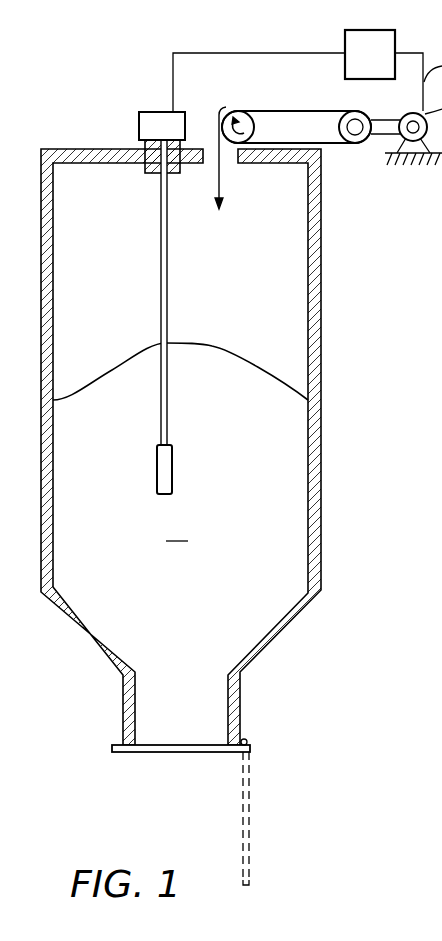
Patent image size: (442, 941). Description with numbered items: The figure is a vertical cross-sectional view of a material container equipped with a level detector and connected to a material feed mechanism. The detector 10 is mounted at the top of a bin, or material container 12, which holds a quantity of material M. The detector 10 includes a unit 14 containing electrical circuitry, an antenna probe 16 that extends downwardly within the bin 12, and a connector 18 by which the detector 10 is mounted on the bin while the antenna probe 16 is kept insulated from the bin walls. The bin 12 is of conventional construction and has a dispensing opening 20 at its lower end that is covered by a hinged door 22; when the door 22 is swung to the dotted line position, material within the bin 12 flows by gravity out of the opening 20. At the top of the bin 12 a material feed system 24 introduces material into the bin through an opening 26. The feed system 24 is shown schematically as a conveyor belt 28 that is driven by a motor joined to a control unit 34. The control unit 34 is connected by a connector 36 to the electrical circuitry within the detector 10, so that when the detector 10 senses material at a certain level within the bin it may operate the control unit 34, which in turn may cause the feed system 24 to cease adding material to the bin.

The detector 10 is at (115, 84).
The material container 12 is at (322, 487).
The unit 14 is at (186, 123).
The antenna probe 16 is at (168, 240).
The connector 18 is at (146, 146).
The dispensing opening 20 is at (230, 712).
The hinged door 22 is at (162, 752).
The material feed system 24 is at (343, 166).
The opening 26 is at (237, 156).
The conveyor belt 28 is at (321, 110).
The control unit 34 is at (395, 35).
The connector 36 is at (268, 53).